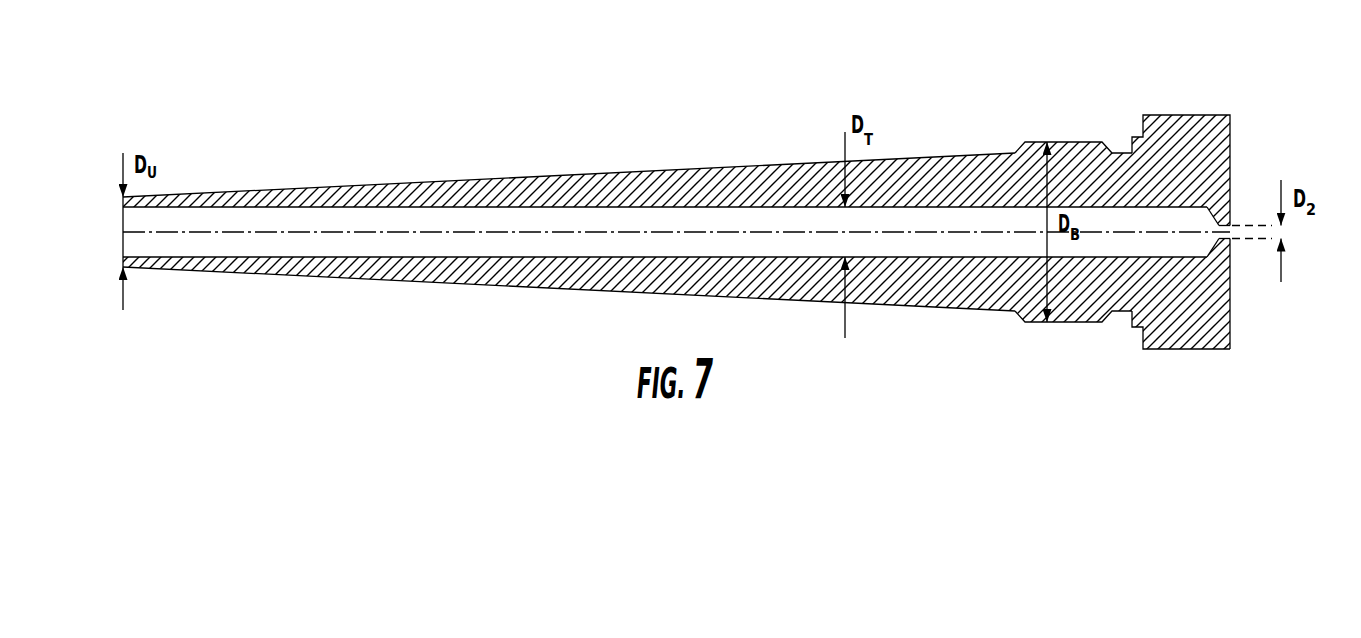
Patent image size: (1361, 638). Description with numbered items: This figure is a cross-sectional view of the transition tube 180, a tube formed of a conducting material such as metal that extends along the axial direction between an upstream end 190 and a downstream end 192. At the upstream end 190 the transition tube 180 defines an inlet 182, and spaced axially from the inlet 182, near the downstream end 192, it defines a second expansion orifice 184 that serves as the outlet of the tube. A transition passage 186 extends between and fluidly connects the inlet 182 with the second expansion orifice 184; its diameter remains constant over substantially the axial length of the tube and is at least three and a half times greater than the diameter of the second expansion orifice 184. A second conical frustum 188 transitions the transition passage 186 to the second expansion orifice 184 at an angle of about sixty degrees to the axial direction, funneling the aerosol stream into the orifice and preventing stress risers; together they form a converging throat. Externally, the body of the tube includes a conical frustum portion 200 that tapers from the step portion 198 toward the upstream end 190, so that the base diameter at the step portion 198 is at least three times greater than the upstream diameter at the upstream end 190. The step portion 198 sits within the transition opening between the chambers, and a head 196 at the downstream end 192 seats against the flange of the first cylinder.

The transition tube 180 is at (464, 110).
The inlet 182 is at (121, 212).
The second expansion orifice 184 is at (1230, 243).
The transition passage 186 is at (602, 227).
The second conical frustum 188 is at (1212, 255).
The upstream end 190 is at (140, 294).
The downstream end 192 is at (1246, 4).
The head 196 is at (1178, 340).
The step portion 198 is at (1063, 151).
The conical frustum portion 200 is at (717, 166).